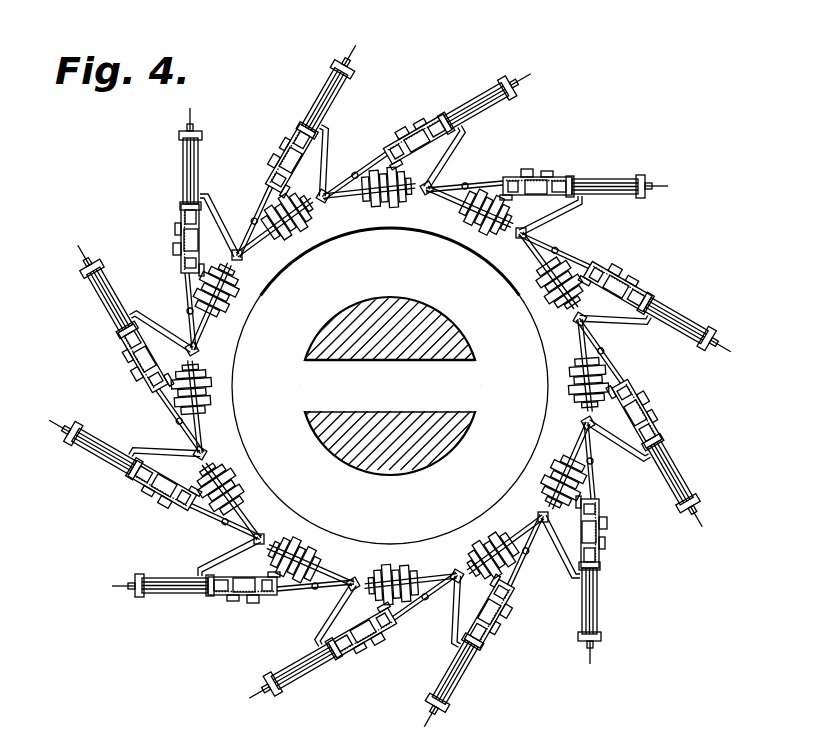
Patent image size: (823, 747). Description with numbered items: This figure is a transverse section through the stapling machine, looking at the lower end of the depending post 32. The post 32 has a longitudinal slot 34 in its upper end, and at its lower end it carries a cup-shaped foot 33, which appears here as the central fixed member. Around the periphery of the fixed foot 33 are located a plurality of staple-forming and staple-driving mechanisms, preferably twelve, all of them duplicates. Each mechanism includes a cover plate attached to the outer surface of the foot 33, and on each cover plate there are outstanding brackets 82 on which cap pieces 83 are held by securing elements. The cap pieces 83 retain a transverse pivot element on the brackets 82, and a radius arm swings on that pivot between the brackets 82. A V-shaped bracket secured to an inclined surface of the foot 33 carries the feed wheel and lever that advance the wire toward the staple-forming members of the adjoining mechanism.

The depending post 32 is at (401, 308).
The cup-shaped foot 33 is at (268, 268).
The longitudinal slot 34 is at (470, 379).
The outstanding brackets 82 is at (373, 600).
The cap pieces 83 is at (414, 612).